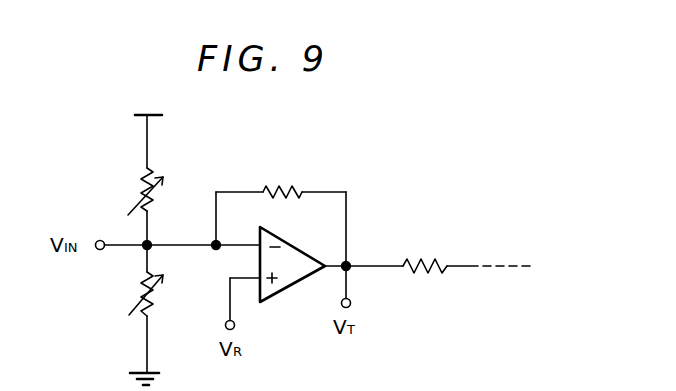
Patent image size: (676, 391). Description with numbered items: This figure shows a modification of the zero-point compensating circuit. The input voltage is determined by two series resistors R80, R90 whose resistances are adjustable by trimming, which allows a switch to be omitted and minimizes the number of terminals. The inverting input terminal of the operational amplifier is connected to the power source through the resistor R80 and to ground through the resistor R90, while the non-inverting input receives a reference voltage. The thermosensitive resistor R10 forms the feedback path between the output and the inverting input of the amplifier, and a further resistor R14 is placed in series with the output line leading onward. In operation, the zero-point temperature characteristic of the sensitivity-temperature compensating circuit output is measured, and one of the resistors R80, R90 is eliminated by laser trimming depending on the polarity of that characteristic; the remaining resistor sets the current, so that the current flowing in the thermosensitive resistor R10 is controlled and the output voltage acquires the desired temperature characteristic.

The resistor R80 is at (152, 199).
The resistor R90 is at (152, 298).
The thermosensitive resistor R10 is at (300, 175).
The output resistor R14 is at (425, 252).